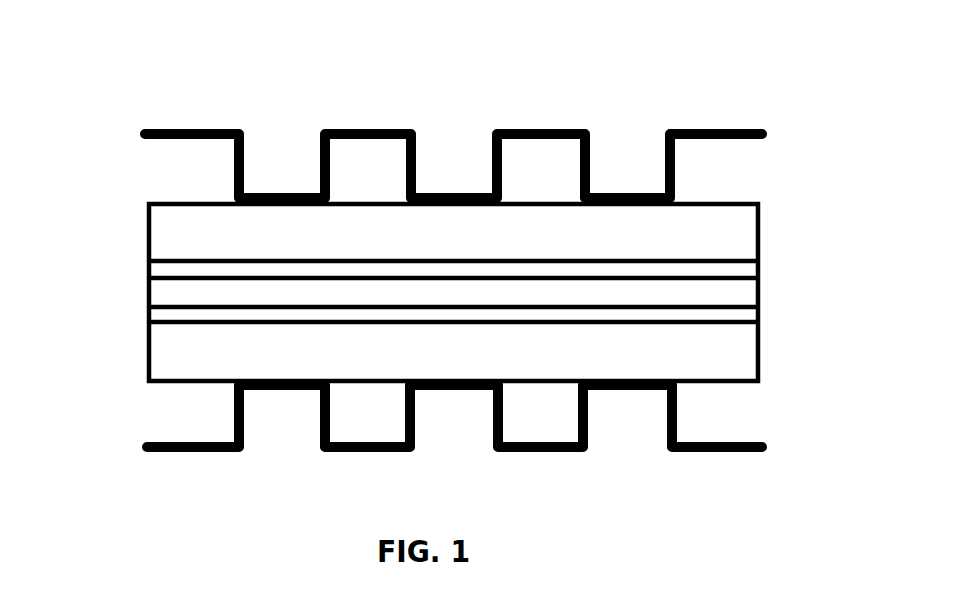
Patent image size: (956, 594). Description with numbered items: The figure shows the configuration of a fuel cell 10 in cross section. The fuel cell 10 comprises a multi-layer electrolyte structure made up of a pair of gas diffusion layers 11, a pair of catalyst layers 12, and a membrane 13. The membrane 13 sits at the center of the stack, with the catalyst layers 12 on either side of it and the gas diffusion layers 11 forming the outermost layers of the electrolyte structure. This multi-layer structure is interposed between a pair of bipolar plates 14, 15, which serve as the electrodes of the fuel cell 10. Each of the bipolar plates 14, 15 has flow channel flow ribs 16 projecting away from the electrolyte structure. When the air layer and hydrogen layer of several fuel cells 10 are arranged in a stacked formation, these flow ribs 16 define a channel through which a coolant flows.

The fuel cell 10 is at (103, 89).
The gas diffusion layers 11 is at (148, 233).
The catalyst layers 12 is at (760, 272).
The membrane 13 is at (148, 293).
The bipolar plate 14 is at (146, 135).
The bipolar plate 15 is at (146, 448).
The flow channel flow ribs 16 is at (282, 193).